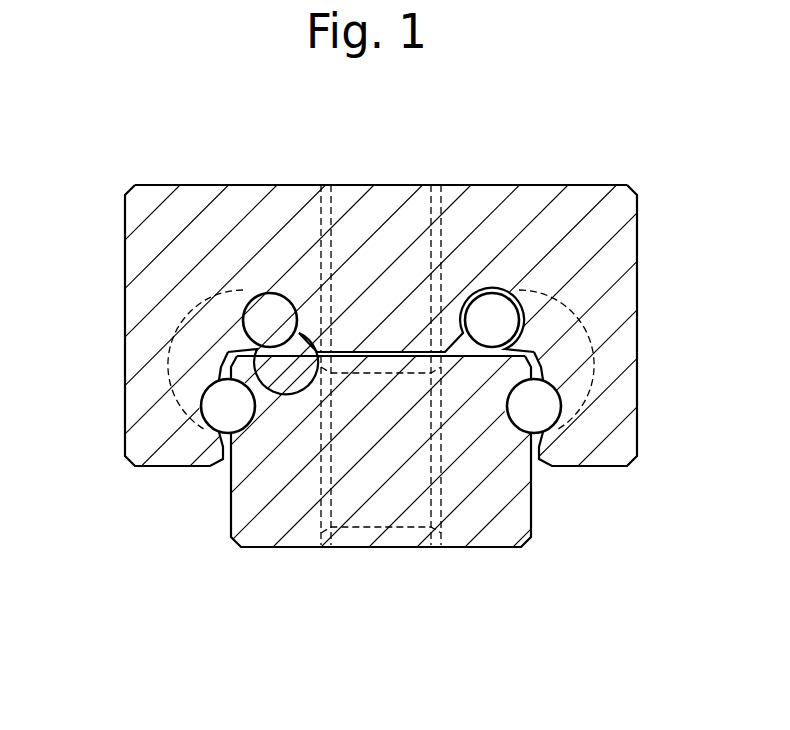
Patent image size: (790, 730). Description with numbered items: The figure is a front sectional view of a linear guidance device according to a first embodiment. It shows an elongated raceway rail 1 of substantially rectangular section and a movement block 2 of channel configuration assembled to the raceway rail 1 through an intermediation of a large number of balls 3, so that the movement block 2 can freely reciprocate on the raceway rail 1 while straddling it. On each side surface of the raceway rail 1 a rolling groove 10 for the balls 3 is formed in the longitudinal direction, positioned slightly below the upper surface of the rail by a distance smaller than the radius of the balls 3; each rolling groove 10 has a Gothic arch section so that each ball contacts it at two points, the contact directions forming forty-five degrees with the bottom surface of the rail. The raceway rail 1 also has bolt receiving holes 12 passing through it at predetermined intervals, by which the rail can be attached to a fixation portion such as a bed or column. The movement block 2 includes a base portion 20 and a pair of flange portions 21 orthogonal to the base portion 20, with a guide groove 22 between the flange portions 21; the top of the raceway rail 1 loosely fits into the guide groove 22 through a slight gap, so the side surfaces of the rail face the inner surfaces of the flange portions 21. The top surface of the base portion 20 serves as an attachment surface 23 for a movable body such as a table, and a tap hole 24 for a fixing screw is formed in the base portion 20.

The raceway rail 1 is at (416, 498).
The movement block 2 is at (395, 279).
The balls 3 is at (258, 307).
The rolling groove 10 is at (238, 410).
The bolt receiving holes 12 is at (331, 488).
The base portion 20 is at (568, 218).
The flange portions 21 is at (125, 365).
The guide groove 22 is at (407, 358).
The attachment surface 23 is at (304, 185).
The tap hole 24 is at (415, 198).